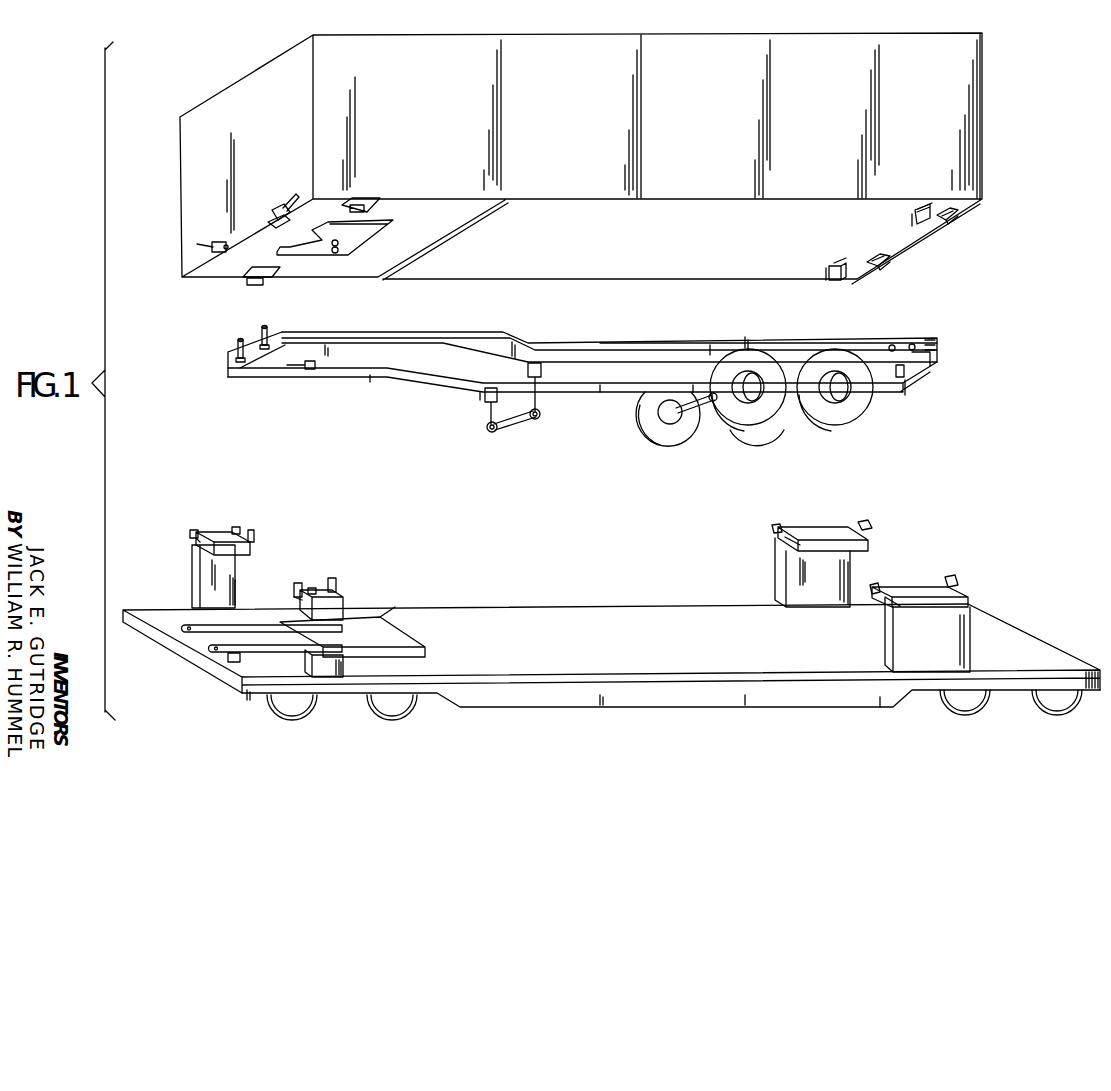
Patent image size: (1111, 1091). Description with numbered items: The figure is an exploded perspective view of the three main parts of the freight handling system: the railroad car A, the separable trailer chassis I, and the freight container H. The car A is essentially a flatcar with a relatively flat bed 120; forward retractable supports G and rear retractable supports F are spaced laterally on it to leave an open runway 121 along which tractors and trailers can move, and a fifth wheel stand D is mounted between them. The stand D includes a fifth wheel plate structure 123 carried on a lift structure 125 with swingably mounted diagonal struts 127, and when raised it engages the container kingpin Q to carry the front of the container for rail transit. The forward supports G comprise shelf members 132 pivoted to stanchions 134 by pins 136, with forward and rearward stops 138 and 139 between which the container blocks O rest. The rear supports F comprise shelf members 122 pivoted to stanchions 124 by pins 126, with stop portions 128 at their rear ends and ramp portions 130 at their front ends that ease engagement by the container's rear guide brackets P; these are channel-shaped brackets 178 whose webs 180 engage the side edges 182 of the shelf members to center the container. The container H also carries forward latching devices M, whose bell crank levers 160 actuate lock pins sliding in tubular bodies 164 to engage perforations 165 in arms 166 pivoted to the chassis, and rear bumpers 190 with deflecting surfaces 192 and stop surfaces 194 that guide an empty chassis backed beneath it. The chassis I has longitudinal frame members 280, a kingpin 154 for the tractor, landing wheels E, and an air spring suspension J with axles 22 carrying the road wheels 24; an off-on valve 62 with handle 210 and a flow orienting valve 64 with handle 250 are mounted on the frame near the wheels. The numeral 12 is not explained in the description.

The freight container H is at (988, 88).
The forward latching devices M is at (218, 238).
The bell crank levers 160 is at (287, 196).
The tubular bodies 164 is at (274, 223).
The blocks O is at (362, 200).
The kingpin Q is at (328, 266).
The rear guide brackets P is at (830, 280).
The channel-shaped brackets 178 is at (830, 258).
The webs 180 is at (840, 265).
The bumpers 190 is at (883, 269).
The deflecting surfaces 192 is at (870, 268).
The stop surfaces 194 is at (888, 262).
The trailer chassis I is at (585, 390).
The longitudinal members 280 is at (686, 345).
The kingpin 154 is at (310, 370).
The perforations 165 is at (265, 325).
The arms 166 is at (270, 344).
The landing wheels E is at (484, 436).
The air spring suspension J is at (627, 423).
The axles 22 is at (685, 422).
The chassis road wheels 24 is at (740, 436).
The off-on valve 62 is at (900, 374).
The flow orienting valve 64 is at (920, 358).
The handle 210 is at (892, 344).
The actuating handle 250 is at (914, 344).
The trailer 12 is at (950, 335).
The flat bed 120 is at (585, 608).
The railroad car A is at (582, 707).
The fifth wheel stand D is at (392, 600).
The open runway 121 is at (204, 598).
The stanchions 134 is at (236, 592).
The forward retractable supports G is at (220, 503).
The pins 136 is at (197, 530).
The shelf members 132 is at (239, 527).
The rearward stops 139 is at (254, 532).
The forward stops 138 is at (196, 542).
The fifth wheel plate structure 123 is at (433, 640).
The diagonal struts 127 is at (205, 638).
The lift structure 125 is at (232, 662).
The rear retractable supports F is at (877, 517).
The shelf members 122 is at (825, 535).
The stanchions 124 is at (852, 580).
The side edges 182 is at (830, 550).
The stop portions 128 is at (870, 527).
The pins 126 is at (775, 527).
The ramp portions 130 is at (785, 542).